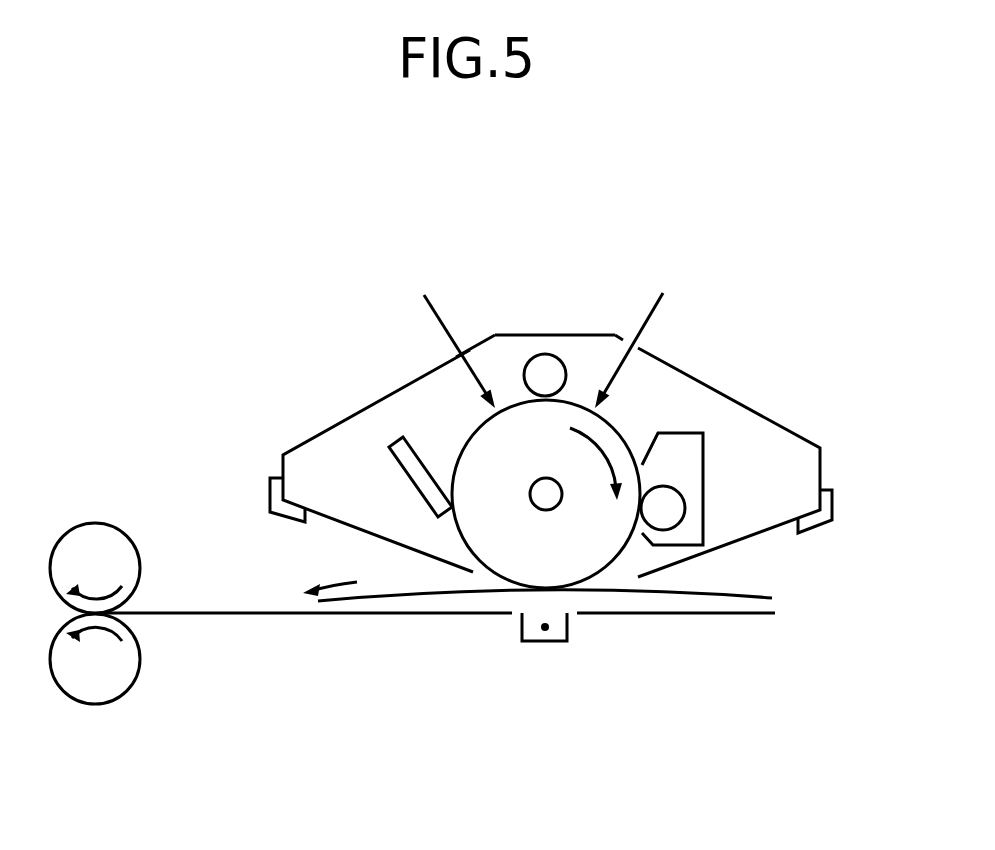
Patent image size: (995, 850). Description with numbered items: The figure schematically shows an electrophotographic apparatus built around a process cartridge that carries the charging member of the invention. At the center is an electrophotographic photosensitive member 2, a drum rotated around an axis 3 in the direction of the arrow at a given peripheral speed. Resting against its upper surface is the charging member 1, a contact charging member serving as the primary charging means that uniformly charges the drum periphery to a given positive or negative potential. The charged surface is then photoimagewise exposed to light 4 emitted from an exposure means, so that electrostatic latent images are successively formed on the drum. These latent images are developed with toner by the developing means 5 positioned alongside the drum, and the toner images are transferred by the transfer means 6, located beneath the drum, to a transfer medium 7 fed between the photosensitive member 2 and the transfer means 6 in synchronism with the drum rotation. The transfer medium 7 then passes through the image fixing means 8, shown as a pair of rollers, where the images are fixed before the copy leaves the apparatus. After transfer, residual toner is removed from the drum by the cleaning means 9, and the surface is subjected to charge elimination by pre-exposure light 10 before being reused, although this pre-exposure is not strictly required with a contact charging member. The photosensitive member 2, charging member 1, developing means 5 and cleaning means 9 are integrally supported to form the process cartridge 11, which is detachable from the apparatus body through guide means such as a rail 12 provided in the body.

The charging member 1 is at (545, 354).
The electrophotographic photosensitive member 2 is at (466, 433).
The axis 3 is at (529, 494).
The light 4 is at (659, 300).
The developing means 5 is at (705, 490).
The transfer means 6 is at (550, 641).
The transfer medium 7 is at (748, 596).
The image fixing means 8 is at (118, 523).
The cleaning means 9 is at (400, 478).
The pre-exposure light 10 is at (437, 316).
The process cartridge 11 is at (715, 390).
The rail 12 is at (280, 513).